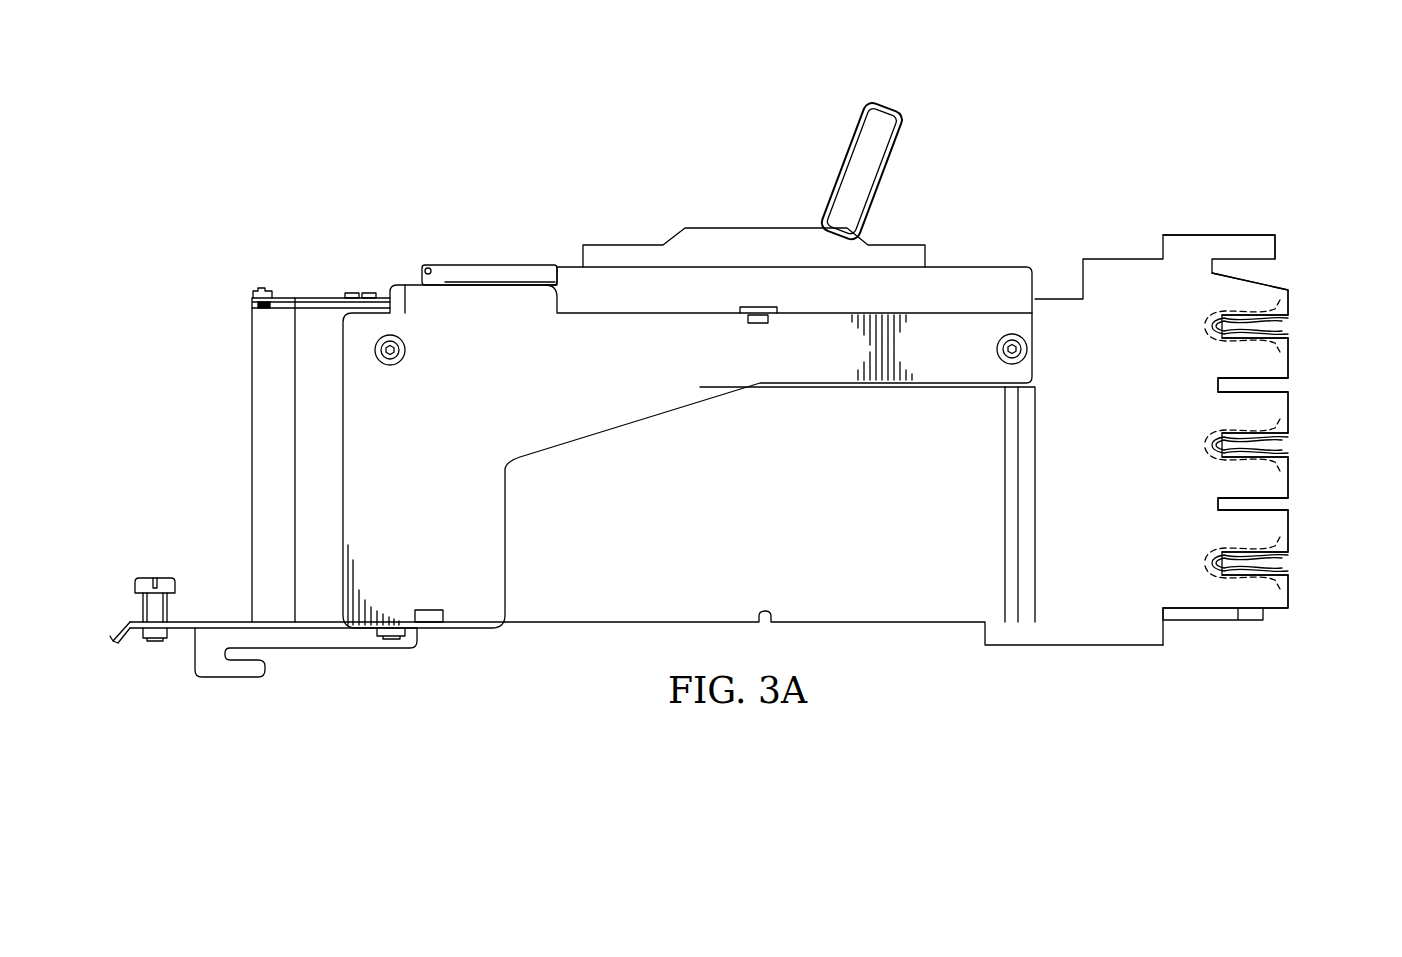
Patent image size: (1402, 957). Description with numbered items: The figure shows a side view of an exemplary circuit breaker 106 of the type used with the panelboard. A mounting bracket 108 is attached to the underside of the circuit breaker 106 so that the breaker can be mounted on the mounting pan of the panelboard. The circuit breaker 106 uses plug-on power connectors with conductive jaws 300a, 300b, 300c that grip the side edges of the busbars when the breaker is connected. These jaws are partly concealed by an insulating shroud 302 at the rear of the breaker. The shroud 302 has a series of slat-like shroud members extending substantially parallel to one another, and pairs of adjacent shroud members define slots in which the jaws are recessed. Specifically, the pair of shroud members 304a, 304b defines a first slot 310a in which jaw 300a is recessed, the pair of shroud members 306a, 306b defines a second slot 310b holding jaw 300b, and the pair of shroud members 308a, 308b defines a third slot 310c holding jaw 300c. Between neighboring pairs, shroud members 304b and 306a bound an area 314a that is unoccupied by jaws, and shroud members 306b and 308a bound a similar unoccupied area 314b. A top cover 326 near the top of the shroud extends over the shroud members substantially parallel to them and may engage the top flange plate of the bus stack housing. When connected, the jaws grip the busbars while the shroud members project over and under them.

The circuit breaker 106 is at (368, 143).
The mounting bracket 108 is at (222, 622).
The insulating shroud 302 is at (1218, 235).
The top cover 326 is at (1277, 252).
The shroud member 304a is at (1290, 294).
The slot 310a is at (1292, 322).
The conductive jaw 300a is at (1267, 333).
The shroud member 304b is at (1290, 358).
The area unoccupied by jaws 314a is at (1215, 384).
The shroud member 306a is at (1290, 415).
The slot 310b is at (1292, 440).
The conductive jaw 300b is at (1267, 452).
The shroud member 306b is at (1290, 476).
The area unoccupied by jaws 314b is at (1215, 505).
The shroud member 308a is at (1290, 533).
The slot 310c is at (1292, 558).
The conductive jaw 300c is at (1267, 570).
The shroud member 308b is at (1290, 594).